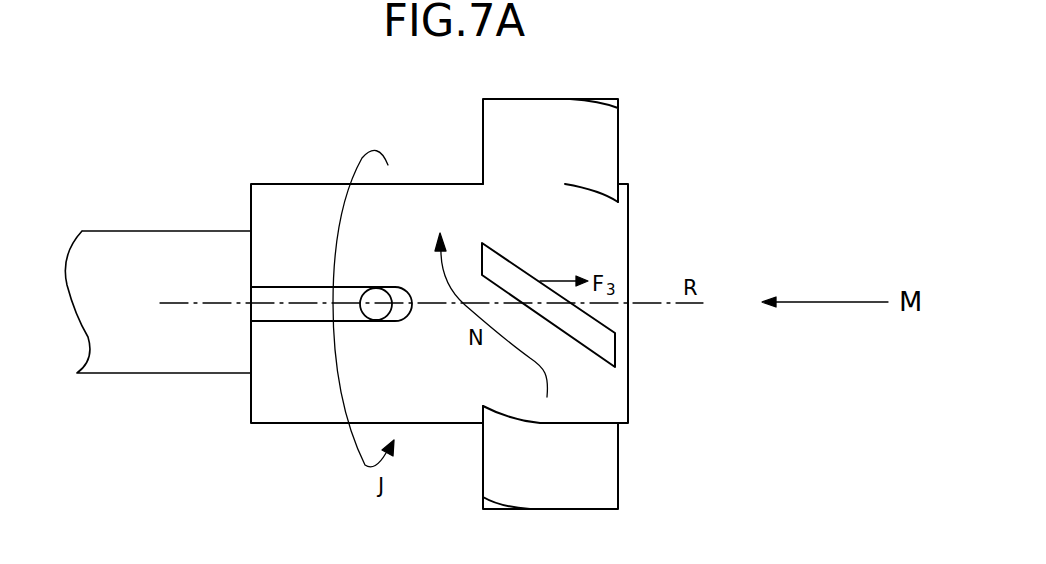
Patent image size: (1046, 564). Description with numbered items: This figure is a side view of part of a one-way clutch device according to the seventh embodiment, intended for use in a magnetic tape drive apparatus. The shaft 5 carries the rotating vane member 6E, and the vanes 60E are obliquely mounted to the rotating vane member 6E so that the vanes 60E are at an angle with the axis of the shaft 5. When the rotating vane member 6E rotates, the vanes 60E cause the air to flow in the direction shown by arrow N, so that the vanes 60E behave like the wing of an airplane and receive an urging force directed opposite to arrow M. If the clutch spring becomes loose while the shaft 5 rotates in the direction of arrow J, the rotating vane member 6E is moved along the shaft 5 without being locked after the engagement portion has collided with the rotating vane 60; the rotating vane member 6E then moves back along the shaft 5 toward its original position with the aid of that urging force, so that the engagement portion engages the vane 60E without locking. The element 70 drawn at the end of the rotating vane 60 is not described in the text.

The shaft 5 is at (177, 358).
The rotating vane member 6E is at (293, 407).
The rotating vane 60 is at (267, 293).
The roller 70 is at (377, 293).
The vane 60E is at (607, 146).